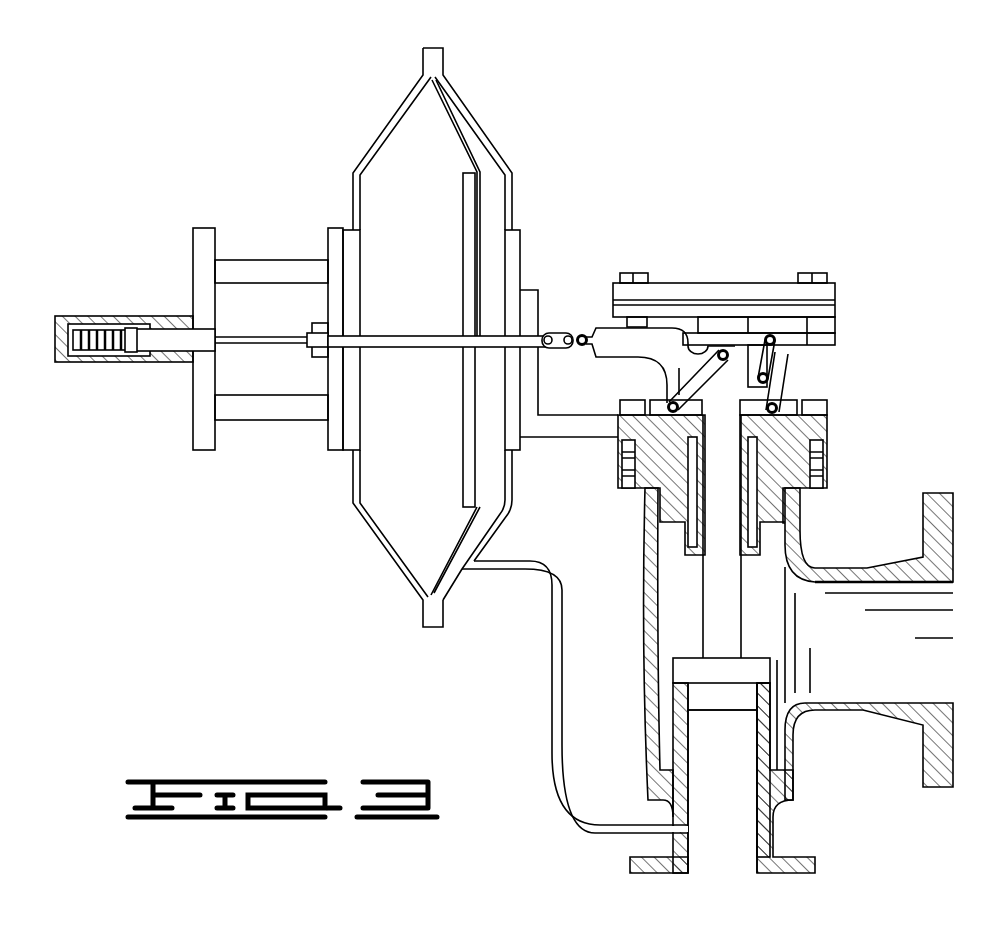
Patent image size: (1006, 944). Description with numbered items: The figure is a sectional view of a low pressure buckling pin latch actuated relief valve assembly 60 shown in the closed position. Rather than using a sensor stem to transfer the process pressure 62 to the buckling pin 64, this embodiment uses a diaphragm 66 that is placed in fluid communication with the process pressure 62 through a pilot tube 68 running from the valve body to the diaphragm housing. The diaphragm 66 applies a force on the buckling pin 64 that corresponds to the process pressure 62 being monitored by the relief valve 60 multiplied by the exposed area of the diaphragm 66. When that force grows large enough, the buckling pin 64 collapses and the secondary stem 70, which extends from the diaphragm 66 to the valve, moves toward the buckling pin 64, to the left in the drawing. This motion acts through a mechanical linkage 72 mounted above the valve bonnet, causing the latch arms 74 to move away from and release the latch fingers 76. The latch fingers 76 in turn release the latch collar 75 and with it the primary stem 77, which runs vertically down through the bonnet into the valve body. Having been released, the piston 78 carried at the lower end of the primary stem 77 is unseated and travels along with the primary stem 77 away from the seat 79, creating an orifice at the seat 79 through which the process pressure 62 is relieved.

The relief valve assembly 60 is at (908, 297).
The process pressure 62 is at (743, 831).
The buckling pin 64 is at (242, 335).
The diaphragm 66 is at (480, 212).
The pilot tube 68 is at (552, 710).
The secondary stem 70 is at (545, 333).
The mechanical linkage 72 is at (657, 333).
The latch arms 74 is at (797, 343).
The latch collar 75 is at (753, 393).
The latch fingers 76 is at (787, 373).
The primary stem 77 is at (720, 610).
The piston 78 is at (690, 668).
The seat 79 is at (763, 700).